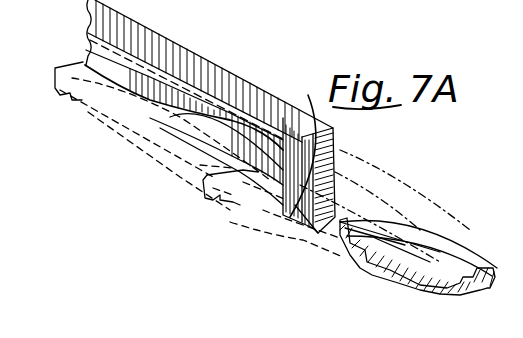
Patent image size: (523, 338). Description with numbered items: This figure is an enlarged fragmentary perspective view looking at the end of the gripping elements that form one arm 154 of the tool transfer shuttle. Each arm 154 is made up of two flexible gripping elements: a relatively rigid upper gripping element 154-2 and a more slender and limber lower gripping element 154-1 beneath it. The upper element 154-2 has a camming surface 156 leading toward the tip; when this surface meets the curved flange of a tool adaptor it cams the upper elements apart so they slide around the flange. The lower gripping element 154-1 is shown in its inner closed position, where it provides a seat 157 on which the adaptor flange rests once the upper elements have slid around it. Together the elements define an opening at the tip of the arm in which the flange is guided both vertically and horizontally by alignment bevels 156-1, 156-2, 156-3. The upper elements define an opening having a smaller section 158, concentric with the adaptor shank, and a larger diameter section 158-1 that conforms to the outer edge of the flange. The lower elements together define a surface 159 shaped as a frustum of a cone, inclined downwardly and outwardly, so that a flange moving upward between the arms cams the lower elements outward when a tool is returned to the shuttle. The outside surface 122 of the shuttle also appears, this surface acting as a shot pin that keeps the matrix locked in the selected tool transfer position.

The outside surface of the shuttle 122 is at (418, 147).
The arm 154 is at (178, 35).
The lower gripping element 154-1 is at (97, 52).
The upper gripping element 154-2 is at (97, 20).
The camming surface 156 is at (335, 175).
The alignment bevel 156-1 is at (335, 165).
The alignment bevel 156-2 is at (313, 117).
The alignment bevel 156-3 is at (295, 210).
The seat 157 is at (226, 106).
The smaller section of the opening 158 is at (227, 81).
The larger diameter section of the opening 158-1 is at (206, 84).
The frusto-conical surface 159 is at (153, 143).